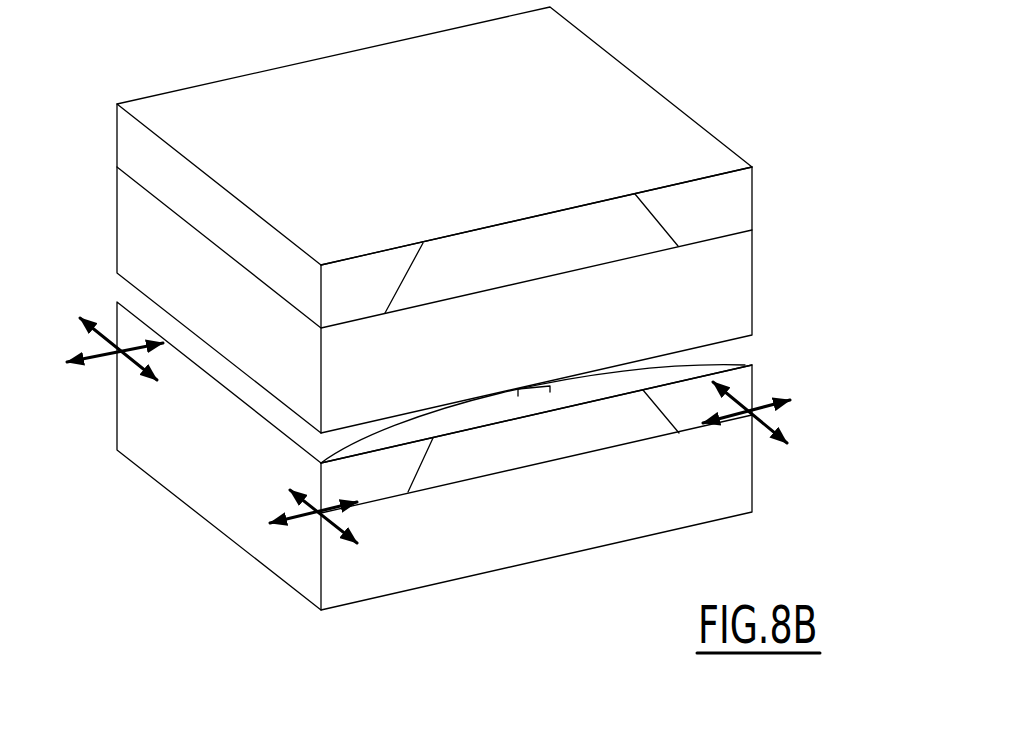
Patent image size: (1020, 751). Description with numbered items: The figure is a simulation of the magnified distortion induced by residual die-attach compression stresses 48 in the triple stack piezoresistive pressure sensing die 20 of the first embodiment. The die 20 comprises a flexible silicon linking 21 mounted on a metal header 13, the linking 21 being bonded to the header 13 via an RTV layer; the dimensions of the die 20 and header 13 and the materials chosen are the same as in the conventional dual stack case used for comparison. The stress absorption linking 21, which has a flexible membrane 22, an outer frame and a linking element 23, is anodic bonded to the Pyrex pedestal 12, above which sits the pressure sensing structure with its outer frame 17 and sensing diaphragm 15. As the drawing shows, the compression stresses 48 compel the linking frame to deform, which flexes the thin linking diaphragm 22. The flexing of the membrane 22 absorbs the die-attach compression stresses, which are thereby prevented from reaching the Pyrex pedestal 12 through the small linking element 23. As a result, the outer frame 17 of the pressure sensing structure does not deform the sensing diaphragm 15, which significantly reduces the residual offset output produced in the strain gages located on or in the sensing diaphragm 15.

The triple stack piezoresistive pressure sensing die 20 is at (668, 93).
The Pyrex pedestal 12 is at (728, 282).
The outer frame 17 is at (738, 205).
The sensing diaphragm 15 is at (523, 216).
The metal header 13 is at (133, 412).
The flexible silicon linking 21 is at (745, 381).
The flexible membrane 22 is at (612, 380).
The linking element 23 is at (533, 397).
The compression stresses 48 is at (790, 402).